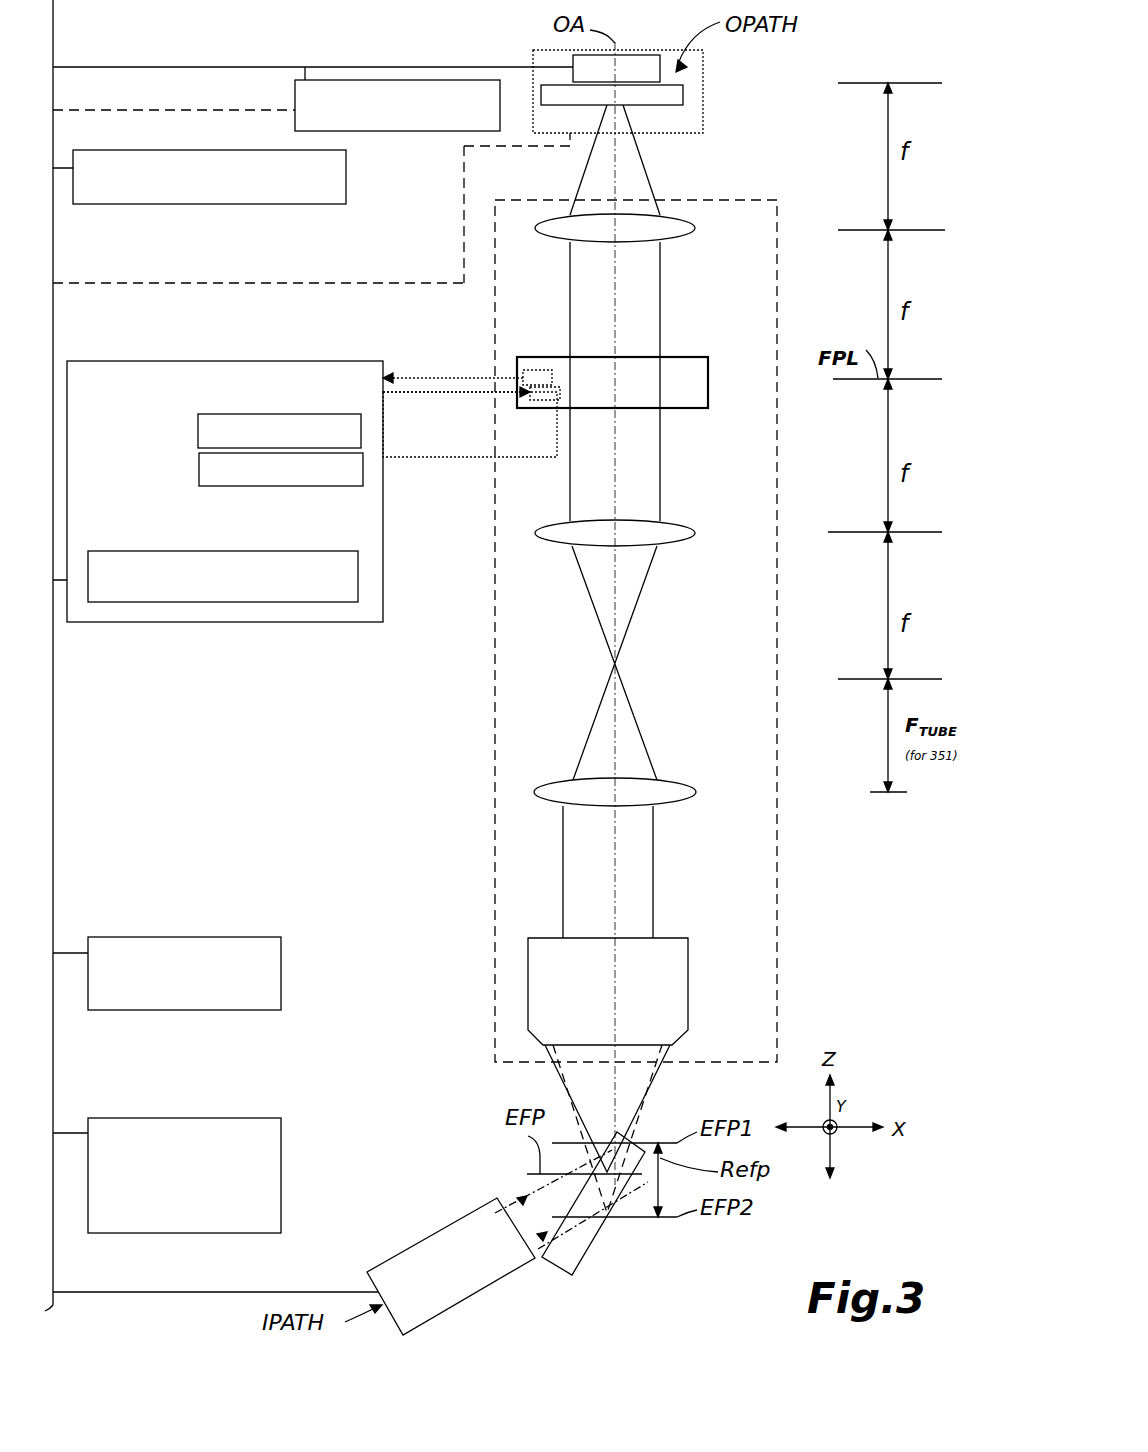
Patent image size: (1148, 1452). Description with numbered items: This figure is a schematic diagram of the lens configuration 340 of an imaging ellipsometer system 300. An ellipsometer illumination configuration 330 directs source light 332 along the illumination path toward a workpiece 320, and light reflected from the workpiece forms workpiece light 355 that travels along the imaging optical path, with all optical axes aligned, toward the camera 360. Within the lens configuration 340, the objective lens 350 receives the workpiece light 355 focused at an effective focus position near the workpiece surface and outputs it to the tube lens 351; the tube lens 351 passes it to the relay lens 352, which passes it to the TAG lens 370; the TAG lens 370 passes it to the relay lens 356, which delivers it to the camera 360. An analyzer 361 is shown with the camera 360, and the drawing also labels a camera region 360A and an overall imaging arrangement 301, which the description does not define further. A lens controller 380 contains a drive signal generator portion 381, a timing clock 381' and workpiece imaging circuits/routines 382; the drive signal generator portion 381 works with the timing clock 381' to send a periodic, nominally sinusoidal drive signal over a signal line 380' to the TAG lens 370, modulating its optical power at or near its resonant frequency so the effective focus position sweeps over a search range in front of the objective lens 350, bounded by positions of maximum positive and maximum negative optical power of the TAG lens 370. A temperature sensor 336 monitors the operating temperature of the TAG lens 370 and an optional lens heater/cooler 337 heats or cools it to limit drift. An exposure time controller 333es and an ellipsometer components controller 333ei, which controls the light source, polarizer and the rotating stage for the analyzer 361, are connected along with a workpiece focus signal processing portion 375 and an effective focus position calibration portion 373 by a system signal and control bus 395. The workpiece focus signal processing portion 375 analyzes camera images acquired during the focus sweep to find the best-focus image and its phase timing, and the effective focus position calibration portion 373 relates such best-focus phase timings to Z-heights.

The imaging ellipsometer system 300 is at (868, 20).
The optical imaging system 301 is at (764, 72).
The workpiece 320 is at (598, 1252).
The ellipsometer illumination configuration 330 is at (409, 1245).
The source light 332 is at (540, 1235).
The exposure time controller 333es is at (281, 966).
The ellipsometer components controller 333ei is at (281, 1145).
The temperature sensor 336 is at (545, 370).
The lens heater/cooler 337 is at (551, 402).
The lens configuration 340 is at (777, 875).
The objective lens 350 is at (688, 1025).
The tube lens 351 is at (679, 782).
The relay lens 352 is at (540, 542).
The workpiece light 355 is at (597, 151).
The relay lens 356 is at (690, 220).
The camera 360 is at (628, 50).
The camera assembly 360A is at (703, 103).
The analyzer 361 is at (642, 105).
The TAG lens 370 is at (672, 357).
The effective focus position (Z-height) calibration portion 373 is at (95, 205).
The workpiece focus signal processing portion 375 is at (295, 118).
The lens controller 380 is at (225, 472).
The signal line 380' is at (462, 416).
The drive signal generator portion 381 is at (235, 431).
The timing clock 381' is at (236, 469).
The workpiece imaging circuits/routines 382 is at (358, 586).
The system signal and control bus 395 is at (53, 850).